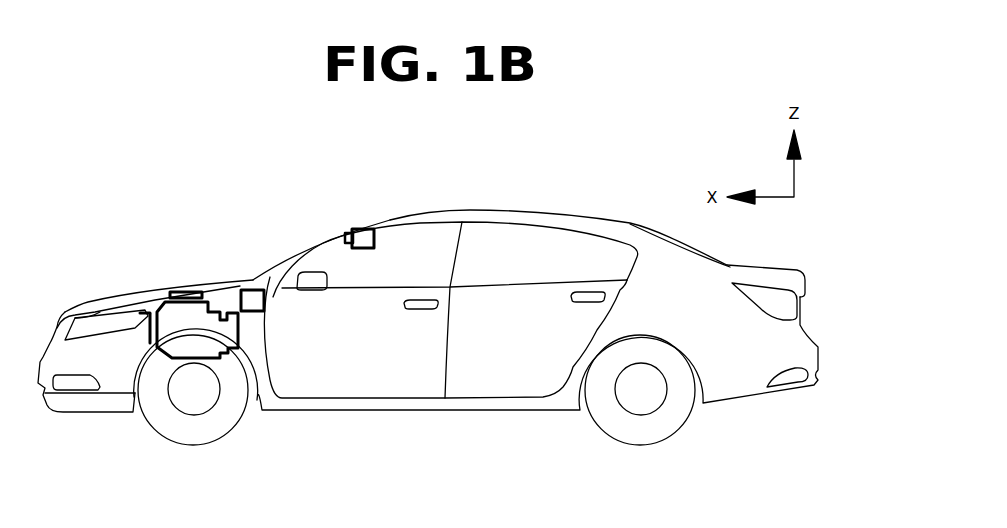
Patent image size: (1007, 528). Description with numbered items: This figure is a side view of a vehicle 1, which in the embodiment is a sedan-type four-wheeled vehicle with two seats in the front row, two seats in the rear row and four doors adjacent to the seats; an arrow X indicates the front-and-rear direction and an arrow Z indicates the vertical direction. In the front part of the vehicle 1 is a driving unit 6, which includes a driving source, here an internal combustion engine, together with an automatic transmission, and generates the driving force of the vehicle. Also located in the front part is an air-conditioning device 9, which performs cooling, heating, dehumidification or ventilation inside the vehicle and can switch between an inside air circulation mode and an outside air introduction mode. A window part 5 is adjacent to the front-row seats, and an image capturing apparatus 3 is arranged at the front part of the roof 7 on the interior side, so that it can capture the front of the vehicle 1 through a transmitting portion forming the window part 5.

The vehicle 1 is at (181, 165).
The image capturing apparatus 3 is at (363, 228).
The window part 5 is at (282, 262).
The driving unit 6 is at (158, 305).
The roof 7 is at (471, 210).
The air-conditioning device 9 is at (243, 289).